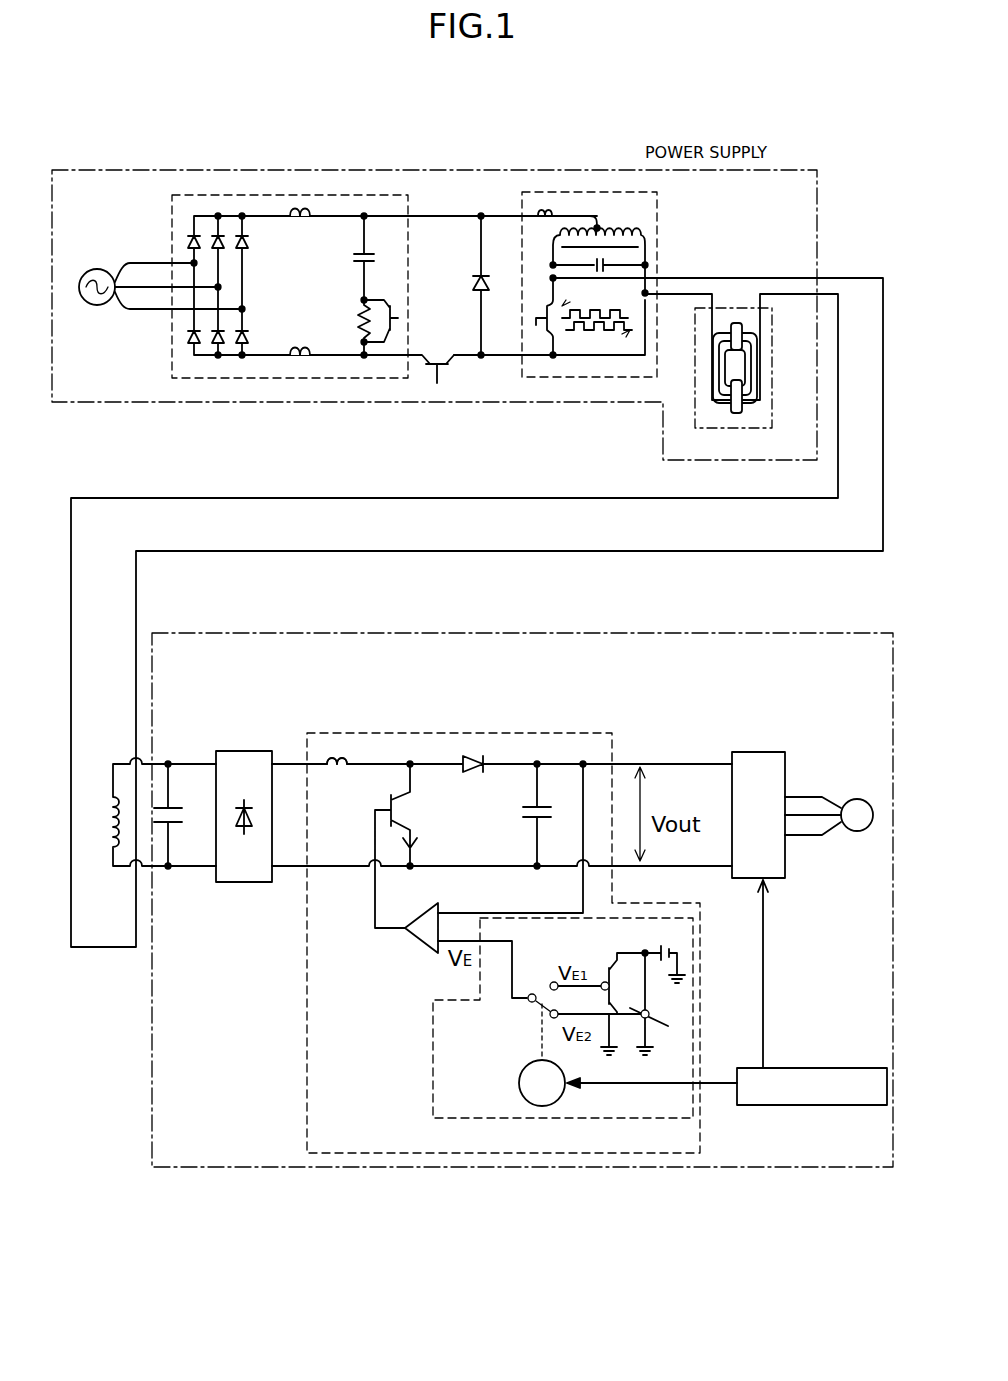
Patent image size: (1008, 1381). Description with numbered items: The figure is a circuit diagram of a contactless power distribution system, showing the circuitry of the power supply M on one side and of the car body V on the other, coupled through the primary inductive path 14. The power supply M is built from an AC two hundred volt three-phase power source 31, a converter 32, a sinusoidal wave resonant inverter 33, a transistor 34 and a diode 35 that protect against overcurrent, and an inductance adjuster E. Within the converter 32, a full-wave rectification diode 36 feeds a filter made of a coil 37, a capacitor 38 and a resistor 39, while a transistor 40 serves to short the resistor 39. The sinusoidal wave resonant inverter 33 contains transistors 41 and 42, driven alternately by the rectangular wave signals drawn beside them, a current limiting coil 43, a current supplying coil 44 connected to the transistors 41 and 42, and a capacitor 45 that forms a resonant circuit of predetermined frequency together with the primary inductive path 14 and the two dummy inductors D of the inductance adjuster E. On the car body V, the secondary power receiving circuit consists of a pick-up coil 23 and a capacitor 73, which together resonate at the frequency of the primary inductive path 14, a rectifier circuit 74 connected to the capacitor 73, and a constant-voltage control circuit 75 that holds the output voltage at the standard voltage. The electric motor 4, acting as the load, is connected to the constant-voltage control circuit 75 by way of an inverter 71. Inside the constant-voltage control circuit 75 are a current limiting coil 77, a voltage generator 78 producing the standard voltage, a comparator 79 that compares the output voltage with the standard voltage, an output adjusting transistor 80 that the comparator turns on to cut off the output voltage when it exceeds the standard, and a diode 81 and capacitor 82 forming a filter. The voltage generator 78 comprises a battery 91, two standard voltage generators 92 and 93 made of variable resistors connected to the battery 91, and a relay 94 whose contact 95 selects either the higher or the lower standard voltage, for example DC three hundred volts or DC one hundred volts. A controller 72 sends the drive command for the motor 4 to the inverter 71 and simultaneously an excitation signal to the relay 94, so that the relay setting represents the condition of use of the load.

The electric motor 4 is at (861, 798).
The primary inductive path 14 is at (124, 497).
The pick-up coil 23 is at (104, 858).
The three-phase power source 31 is at (100, 268).
The converter 32 is at (425, 208).
The sinusoidal wave resonant inverter 33 is at (515, 206).
The transistor 34 is at (435, 355).
The diode 35 is at (478, 280).
The full-wave rectification diode 36 is at (246, 287).
The coil 37 is at (305, 230).
The capacitor 38 is at (357, 264).
The resistor 39 is at (360, 328).
The transistor 40 is at (395, 310).
The transistor 41 is at (540, 316).
The transistor 42 is at (636, 302).
The current limiting coil 43 is at (558, 214).
The current supplying coil 44 is at (612, 234).
The capacitor 45 is at (590, 260).
The inverter 71 is at (768, 752).
The controller 72 is at (798, 1068).
The capacitor 73 is at (184, 806).
The rectifier circuit 74 is at (240, 751).
The constant-voltage control circuit 75 is at (612, 747).
The inductor 77 is at (338, 770).
The voltage generator 78 is at (700, 963).
The comparator 79 is at (414, 958).
The output adjusting transistor 80 is at (410, 828).
The diode 81 is at (478, 774).
The capacitor 82 is at (528, 822).
The battery 91 is at (660, 950).
The standard voltage generator 92 is at (605, 960).
The standard voltage generator 93 is at (641, 1025).
The relay 94 is at (517, 1080).
The contact 95 is at (525, 1013).
The power supply M is at (818, 238).
The car body V is at (632, 634).
The dummy inductor D is at (737, 322).
The inductance adjuster E is at (763, 350).